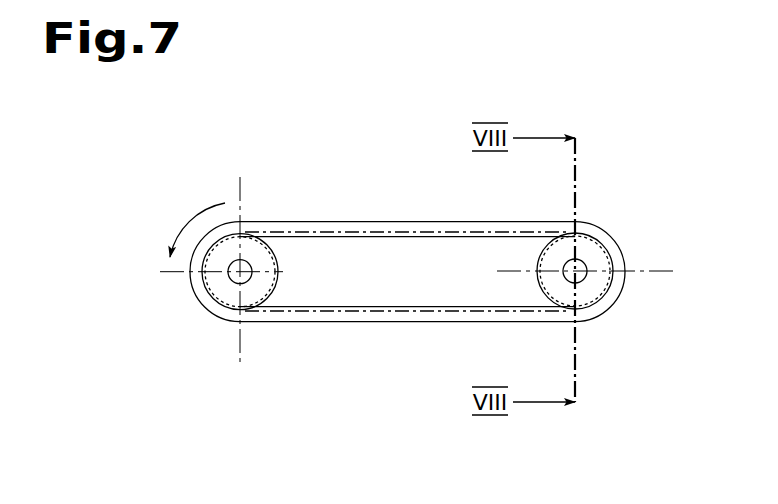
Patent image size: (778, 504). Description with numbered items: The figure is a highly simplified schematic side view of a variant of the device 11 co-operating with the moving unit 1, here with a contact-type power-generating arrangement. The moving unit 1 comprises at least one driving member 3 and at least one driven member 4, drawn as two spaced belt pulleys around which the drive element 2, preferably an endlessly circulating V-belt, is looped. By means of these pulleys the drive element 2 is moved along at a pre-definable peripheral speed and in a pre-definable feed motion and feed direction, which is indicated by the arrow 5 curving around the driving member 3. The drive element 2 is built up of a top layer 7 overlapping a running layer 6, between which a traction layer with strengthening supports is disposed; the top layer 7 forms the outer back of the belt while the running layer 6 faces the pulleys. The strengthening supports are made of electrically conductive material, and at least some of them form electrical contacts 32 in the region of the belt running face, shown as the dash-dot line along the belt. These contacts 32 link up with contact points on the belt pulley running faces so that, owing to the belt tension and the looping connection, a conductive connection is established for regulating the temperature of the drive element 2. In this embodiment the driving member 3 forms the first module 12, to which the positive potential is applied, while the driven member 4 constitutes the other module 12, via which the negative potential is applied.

The moving unit 1 is at (392, 182).
The drive element 2 is at (308, 209).
The driving member 3 is at (247, 300).
The driven member 4 is at (605, 296).
The arrow 5 is at (182, 232).
The running layer 6 is at (390, 305).
The top layer 7 is at (362, 320).
The device 11 is at (620, 190).
The module 12 is at (598, 252).
The electrical contacts 32 is at (512, 312).